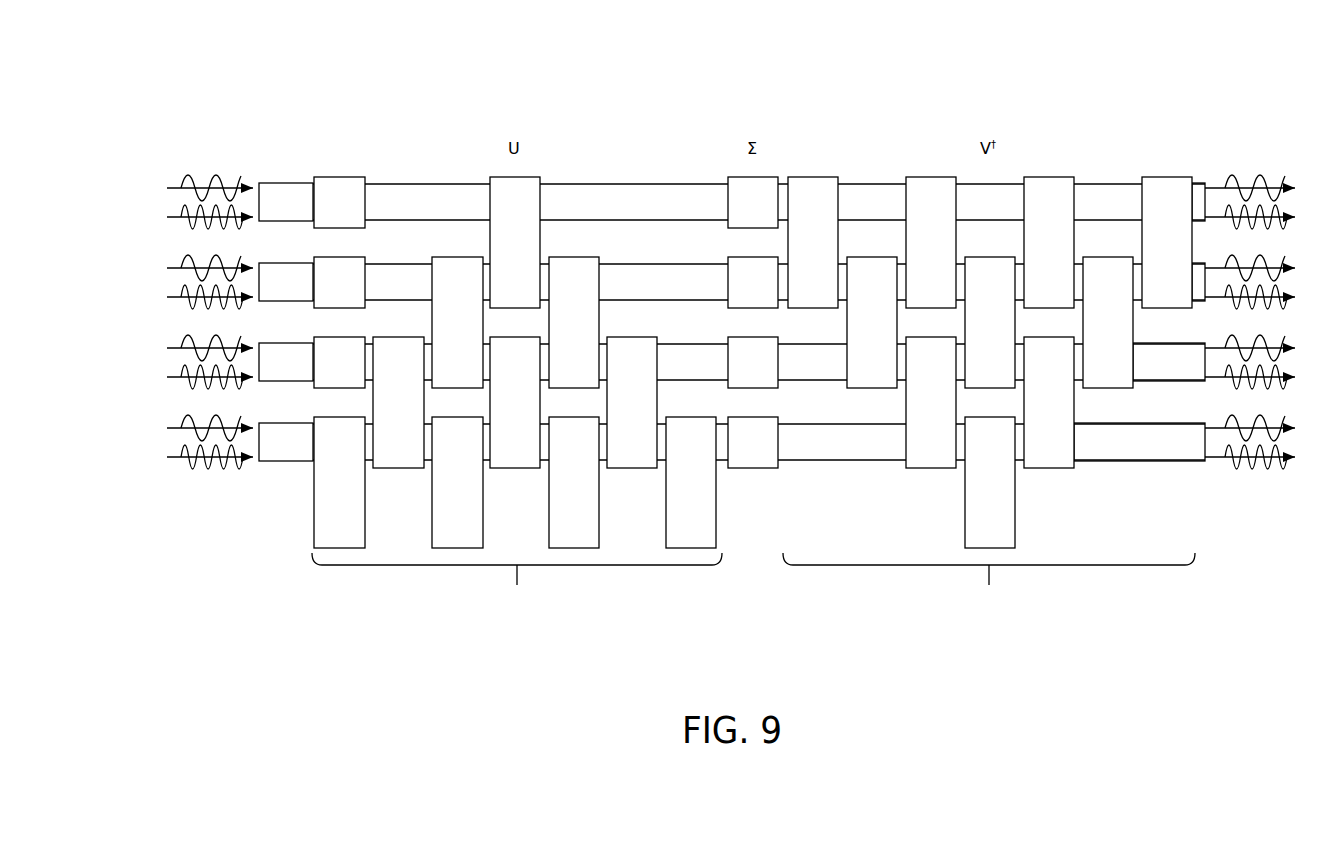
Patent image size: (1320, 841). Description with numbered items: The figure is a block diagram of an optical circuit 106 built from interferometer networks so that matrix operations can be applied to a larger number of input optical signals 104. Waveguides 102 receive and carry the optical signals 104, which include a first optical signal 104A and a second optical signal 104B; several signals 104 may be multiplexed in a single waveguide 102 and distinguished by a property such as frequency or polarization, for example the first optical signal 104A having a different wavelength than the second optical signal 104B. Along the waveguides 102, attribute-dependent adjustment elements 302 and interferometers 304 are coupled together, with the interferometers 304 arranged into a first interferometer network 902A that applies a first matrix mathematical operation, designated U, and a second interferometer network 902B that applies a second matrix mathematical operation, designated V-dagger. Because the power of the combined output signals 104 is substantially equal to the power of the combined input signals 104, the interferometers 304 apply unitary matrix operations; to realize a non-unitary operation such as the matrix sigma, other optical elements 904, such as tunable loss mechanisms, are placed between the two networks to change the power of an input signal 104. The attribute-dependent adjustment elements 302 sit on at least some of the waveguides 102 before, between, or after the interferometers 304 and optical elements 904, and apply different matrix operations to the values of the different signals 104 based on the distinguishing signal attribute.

The waveguide 102 is at (299, 451).
The attribute-dependent adjustment element 302 is at (354, 372).
The interferometer 304 is at (1181, 254).
The optical element 904 is at (767, 452).
The optical signal 104 is at (177, 268).
The first optical signal 104A is at (177, 188).
The second optical signal 104B is at (177, 217).
The optical circuit 106 is at (796, 58).
The first interferometer network 902A is at (495, 611).
The second interferometer network 902B is at (967, 611).